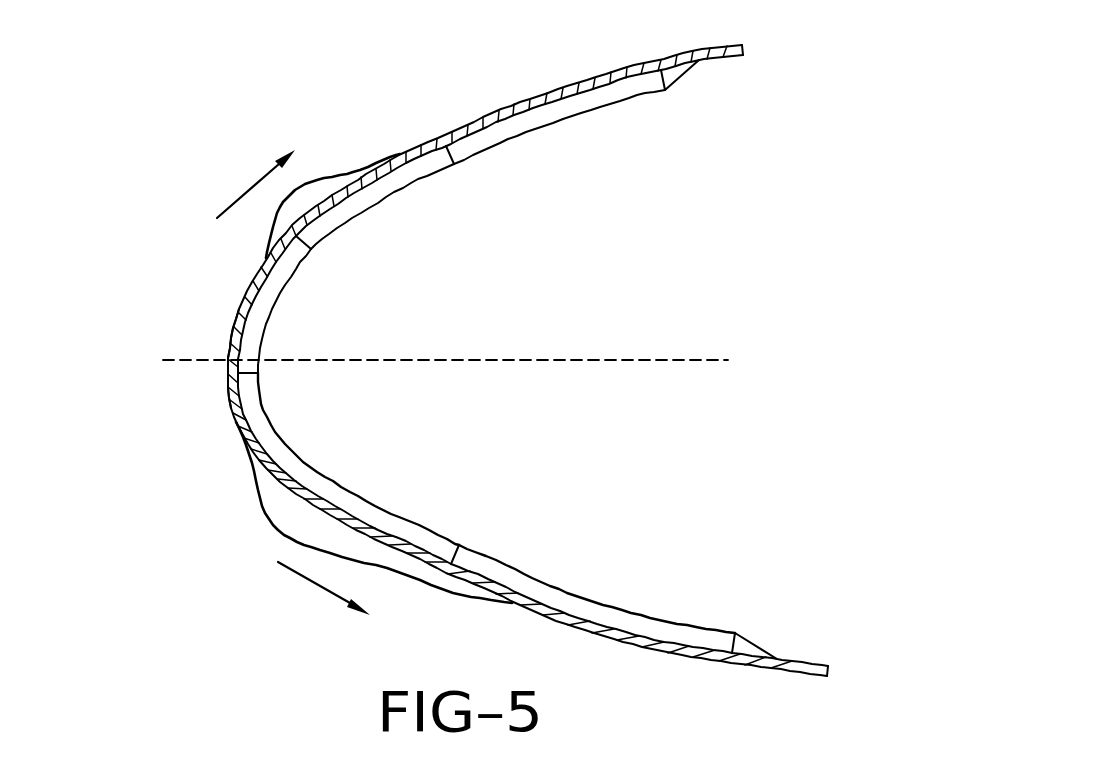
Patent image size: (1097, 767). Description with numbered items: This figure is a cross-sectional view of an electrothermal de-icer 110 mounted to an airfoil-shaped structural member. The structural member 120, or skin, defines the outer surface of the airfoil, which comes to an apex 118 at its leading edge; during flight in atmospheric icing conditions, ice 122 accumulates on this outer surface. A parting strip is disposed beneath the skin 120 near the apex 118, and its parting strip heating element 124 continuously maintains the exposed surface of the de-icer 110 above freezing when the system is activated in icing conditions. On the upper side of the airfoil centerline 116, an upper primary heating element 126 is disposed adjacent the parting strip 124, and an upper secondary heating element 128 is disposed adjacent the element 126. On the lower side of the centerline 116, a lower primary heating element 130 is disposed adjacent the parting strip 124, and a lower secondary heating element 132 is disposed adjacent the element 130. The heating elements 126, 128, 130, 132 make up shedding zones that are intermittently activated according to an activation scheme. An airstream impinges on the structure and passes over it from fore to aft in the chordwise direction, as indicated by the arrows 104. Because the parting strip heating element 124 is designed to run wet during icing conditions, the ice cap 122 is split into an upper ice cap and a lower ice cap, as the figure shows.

The electrothermal de-icer 110 is at (126, 147).
The arrows 104 is at (232, 200).
The airfoil centerline 116 is at (662, 360).
The apex 118 is at (232, 320).
The structural member 120 is at (711, 48).
The ice 122 is at (352, 172).
The parting strip heating element 124 is at (265, 300).
The upper primary heating element 126 is at (347, 217).
The upper secondary heating element 128 is at (548, 107).
The lower primary heating element 130 is at (313, 477).
The lower secondary heating element 132 is at (600, 613).